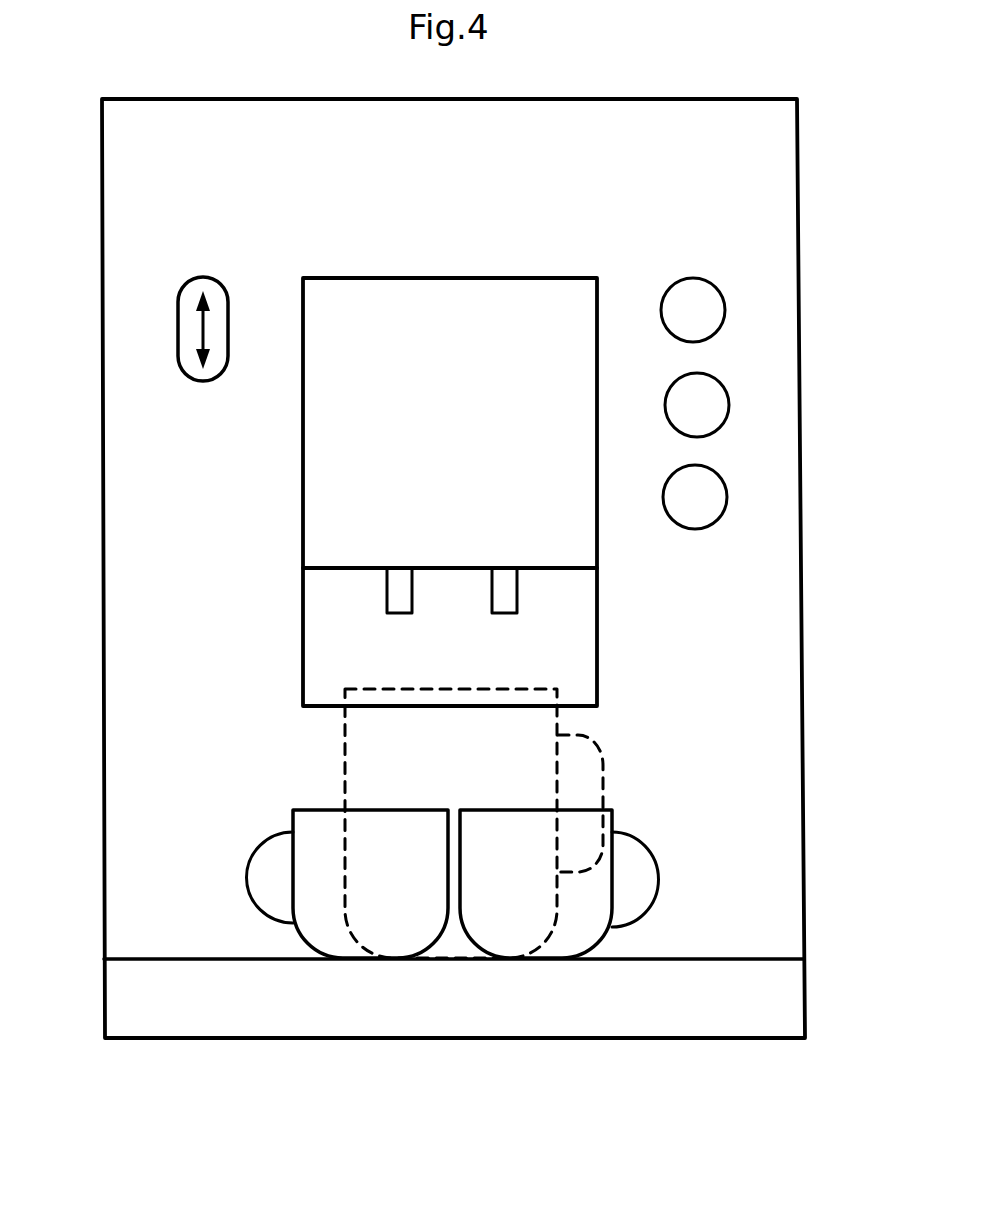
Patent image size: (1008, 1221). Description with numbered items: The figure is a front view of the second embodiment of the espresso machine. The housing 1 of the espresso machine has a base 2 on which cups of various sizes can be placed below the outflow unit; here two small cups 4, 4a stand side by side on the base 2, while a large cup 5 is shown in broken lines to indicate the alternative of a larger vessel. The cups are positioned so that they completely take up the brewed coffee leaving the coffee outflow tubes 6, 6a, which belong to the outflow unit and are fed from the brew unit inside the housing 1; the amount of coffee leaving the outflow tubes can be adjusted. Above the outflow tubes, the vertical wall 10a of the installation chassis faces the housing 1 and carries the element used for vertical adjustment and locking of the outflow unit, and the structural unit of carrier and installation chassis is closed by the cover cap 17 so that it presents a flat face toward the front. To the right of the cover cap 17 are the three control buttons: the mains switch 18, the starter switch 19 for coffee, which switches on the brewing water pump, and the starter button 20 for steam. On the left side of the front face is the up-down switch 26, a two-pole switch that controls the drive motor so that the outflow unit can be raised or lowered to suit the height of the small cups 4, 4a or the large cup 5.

The housing 1 is at (138, 166).
The base 2 is at (126, 995).
The small cup 4 is at (397, 935).
The small cup 4a is at (578, 935).
The large cup 5 is at (583, 782).
The coffee outflow tube 6 is at (405, 597).
The coffee outflow tube 6a is at (512, 590).
The vertical wall 10a is at (318, 630).
The cover cap 17 is at (303, 510).
The mains switch 18 is at (720, 312).
The starter switch for coffee 19 is at (722, 410).
The starter button for steam 20 is at (722, 505).
The up-down switch 26 is at (186, 318).